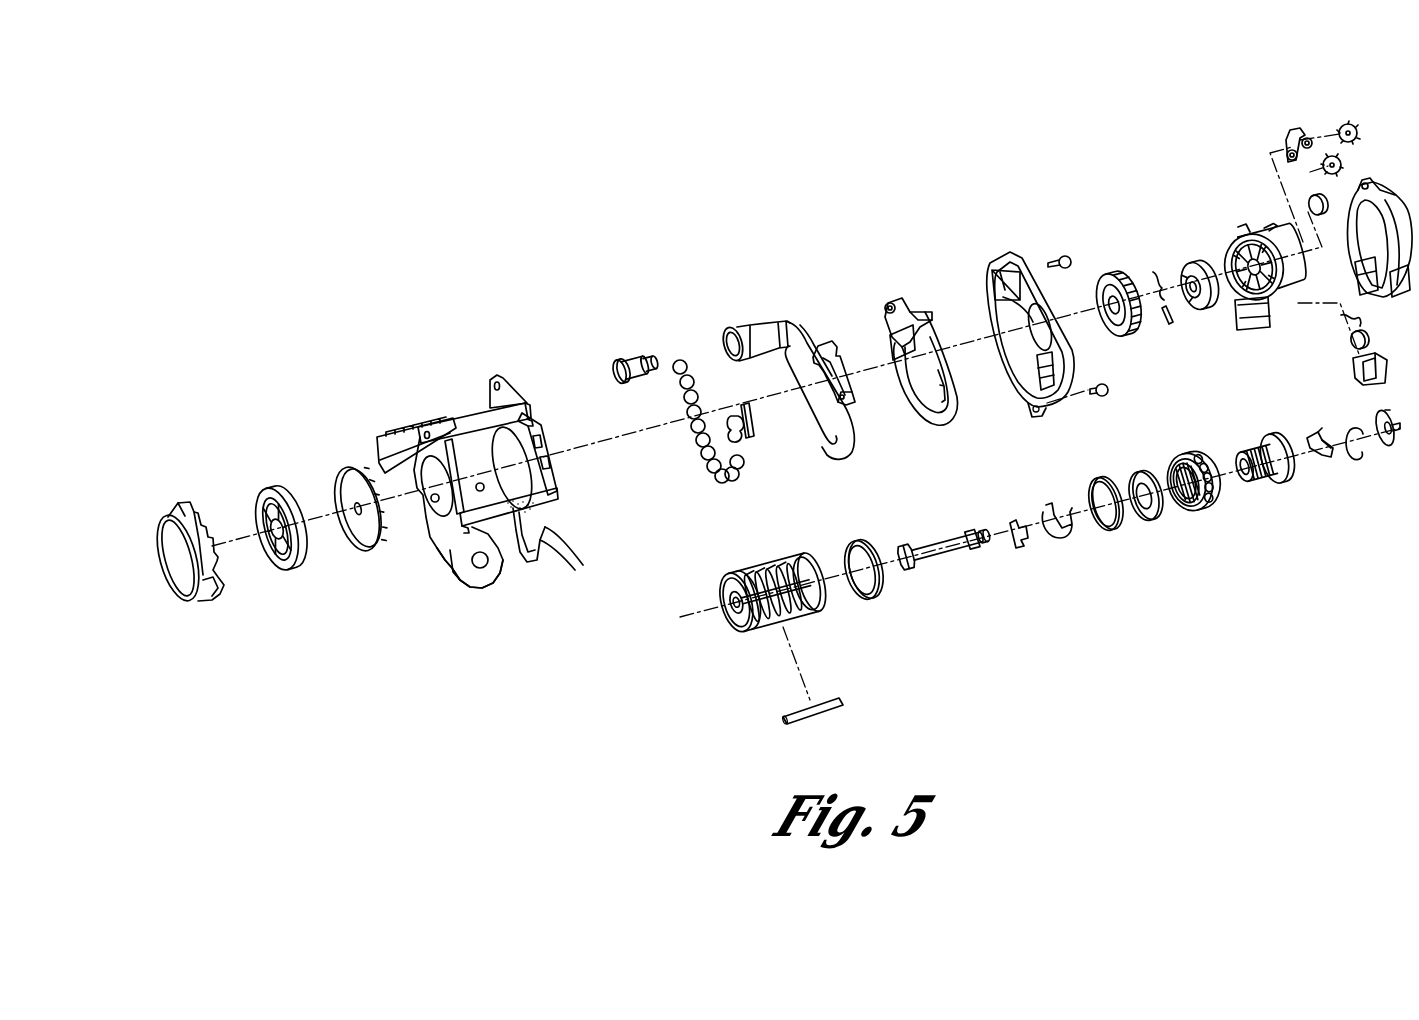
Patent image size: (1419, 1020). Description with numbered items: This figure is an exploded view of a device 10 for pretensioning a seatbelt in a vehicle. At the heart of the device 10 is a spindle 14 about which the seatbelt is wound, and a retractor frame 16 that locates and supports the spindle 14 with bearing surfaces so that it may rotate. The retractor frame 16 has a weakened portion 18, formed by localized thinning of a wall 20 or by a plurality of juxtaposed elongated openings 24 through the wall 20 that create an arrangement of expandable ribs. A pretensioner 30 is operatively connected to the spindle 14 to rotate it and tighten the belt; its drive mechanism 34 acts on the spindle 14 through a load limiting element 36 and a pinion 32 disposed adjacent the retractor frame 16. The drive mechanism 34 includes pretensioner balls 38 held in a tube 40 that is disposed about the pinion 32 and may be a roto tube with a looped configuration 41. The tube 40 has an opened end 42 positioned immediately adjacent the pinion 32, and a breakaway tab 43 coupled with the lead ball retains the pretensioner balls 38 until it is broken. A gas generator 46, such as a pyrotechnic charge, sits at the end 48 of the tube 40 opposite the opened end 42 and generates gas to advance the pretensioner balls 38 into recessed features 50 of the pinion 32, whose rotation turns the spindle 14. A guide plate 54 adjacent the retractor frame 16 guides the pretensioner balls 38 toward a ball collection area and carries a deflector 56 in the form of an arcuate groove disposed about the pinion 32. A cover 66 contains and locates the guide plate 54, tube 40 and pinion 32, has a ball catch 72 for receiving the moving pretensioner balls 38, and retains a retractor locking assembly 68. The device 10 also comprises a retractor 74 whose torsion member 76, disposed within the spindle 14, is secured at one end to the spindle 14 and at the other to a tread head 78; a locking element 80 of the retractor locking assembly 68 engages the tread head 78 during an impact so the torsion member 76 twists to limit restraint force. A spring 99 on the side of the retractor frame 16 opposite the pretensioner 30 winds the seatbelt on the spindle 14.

The device 10 is at (925, 150).
The spindle 14 is at (743, 572).
The retractor frame 16 is at (497, 384).
The weakened portion 18 is at (537, 530).
The wall 20 is at (523, 563).
The juxtaposed elongated openings 24 is at (510, 527).
The pretensioner 30 is at (745, 262).
The pinion 32 is at (1217, 493).
The drive mechanism 34 is at (672, 302).
The load limiting element 36 is at (1063, 530).
The pretensioner balls 38 is at (697, 428).
The tube 40 is at (853, 427).
The looped configuration 41 is at (836, 447).
The opened end 42 is at (818, 352).
The breakaway tab 43 is at (753, 420).
The gas generator 46 is at (619, 358).
The end 48 is at (730, 333).
The recessed features 50 is at (1210, 461).
The guide plate 54 is at (893, 301).
The deflector 56 is at (887, 342).
The cover 66 is at (1027, 265).
The retractor locking assembly 68 is at (1326, 474).
The ball catch 72 is at (1027, 397).
The retractor 74 is at (1109, 638).
The torsion member 76 is at (943, 558).
The tread head 78 is at (1275, 490).
The locking element 80 is at (998, 291).
The spring 99 is at (270, 490).